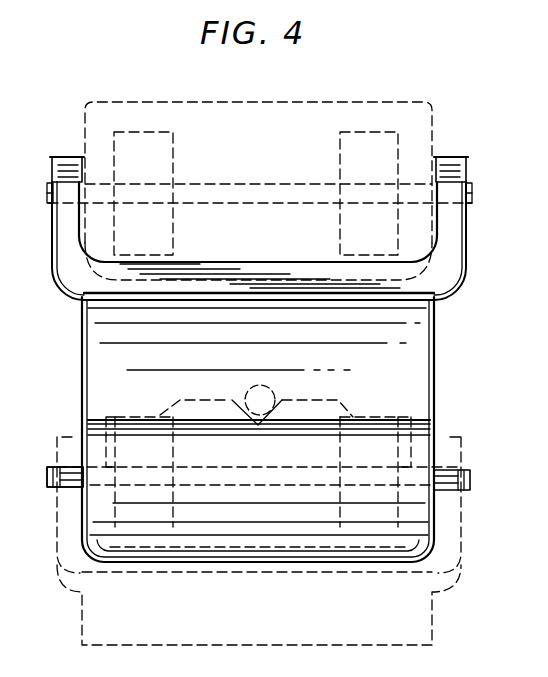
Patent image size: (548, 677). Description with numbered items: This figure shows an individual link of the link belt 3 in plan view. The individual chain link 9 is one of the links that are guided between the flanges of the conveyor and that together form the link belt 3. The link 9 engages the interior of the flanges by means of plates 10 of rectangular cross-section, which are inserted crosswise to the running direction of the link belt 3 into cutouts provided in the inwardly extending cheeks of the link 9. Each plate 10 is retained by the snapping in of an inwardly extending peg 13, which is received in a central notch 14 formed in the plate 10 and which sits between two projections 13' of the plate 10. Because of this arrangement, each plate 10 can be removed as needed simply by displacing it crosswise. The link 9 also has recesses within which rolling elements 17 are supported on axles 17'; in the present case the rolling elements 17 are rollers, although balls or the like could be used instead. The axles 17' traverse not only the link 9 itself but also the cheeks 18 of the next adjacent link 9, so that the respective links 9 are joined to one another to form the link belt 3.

The link belt 3 is at (70, 370).
The individual chain link 9 is at (419, 357).
The plate 10 is at (409, 418).
The peg 13 is at (334, 396).
The projection 13' is at (195, 394).
The central notch 14 is at (248, 411).
The rolling element 17 is at (139, 402).
The axle 17' is at (54, 499).
The cheek 18 is at (70, 157).